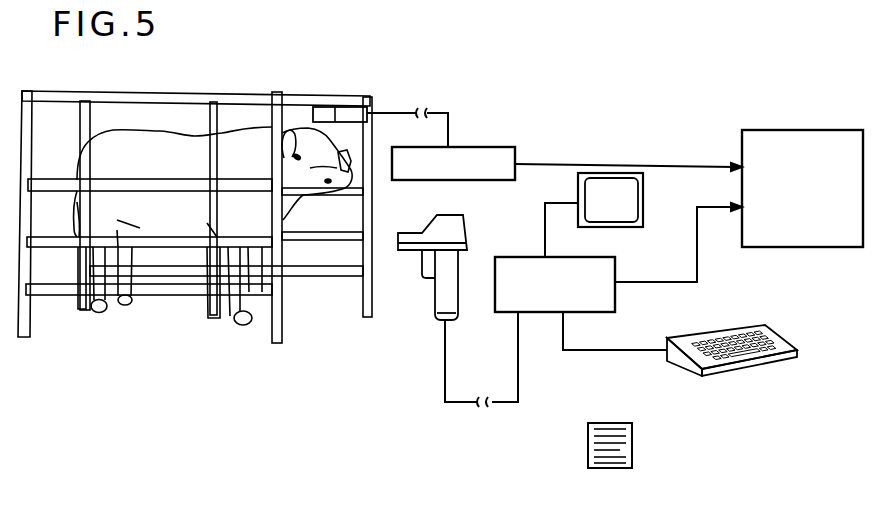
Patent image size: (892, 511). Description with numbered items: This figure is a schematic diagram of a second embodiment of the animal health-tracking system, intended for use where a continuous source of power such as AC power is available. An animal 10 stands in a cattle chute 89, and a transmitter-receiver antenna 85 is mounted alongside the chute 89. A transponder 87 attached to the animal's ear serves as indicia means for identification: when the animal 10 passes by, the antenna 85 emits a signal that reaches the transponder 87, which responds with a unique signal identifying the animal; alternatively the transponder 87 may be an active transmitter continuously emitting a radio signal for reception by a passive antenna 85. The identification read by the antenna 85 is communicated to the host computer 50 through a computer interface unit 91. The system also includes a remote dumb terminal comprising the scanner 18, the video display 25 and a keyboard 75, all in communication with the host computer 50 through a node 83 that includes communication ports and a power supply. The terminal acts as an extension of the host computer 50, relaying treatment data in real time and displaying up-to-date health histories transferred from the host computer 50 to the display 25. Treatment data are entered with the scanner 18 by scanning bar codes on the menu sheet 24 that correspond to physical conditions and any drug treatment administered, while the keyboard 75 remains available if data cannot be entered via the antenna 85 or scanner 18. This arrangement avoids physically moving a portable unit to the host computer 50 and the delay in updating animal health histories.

The animal 10 is at (251, 135).
The cattle chute 89 is at (273, 91).
The transmitter-receiver antenna 85 is at (340, 107).
The transponder 87 is at (348, 173).
The computer interface unit 91 is at (479, 147).
The scanner 18 is at (474, 227).
The video display 25 is at (644, 198).
The node 83 is at (629, 263).
The host computer 50 is at (814, 130).
The keyboard 75 is at (777, 333).
The menu sheet 24 is at (588, 433).